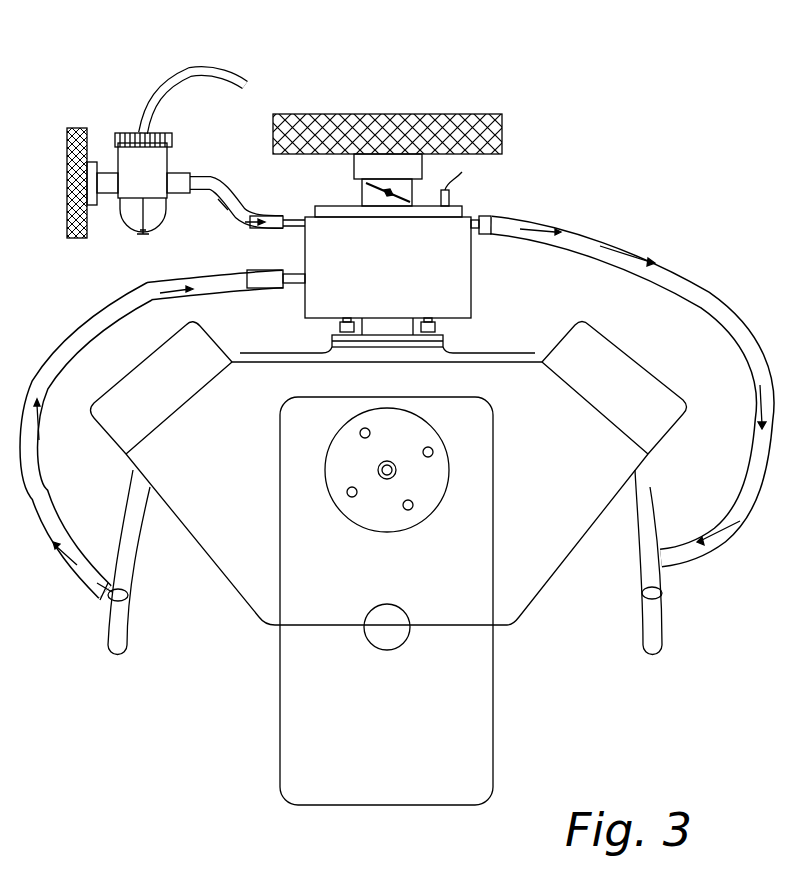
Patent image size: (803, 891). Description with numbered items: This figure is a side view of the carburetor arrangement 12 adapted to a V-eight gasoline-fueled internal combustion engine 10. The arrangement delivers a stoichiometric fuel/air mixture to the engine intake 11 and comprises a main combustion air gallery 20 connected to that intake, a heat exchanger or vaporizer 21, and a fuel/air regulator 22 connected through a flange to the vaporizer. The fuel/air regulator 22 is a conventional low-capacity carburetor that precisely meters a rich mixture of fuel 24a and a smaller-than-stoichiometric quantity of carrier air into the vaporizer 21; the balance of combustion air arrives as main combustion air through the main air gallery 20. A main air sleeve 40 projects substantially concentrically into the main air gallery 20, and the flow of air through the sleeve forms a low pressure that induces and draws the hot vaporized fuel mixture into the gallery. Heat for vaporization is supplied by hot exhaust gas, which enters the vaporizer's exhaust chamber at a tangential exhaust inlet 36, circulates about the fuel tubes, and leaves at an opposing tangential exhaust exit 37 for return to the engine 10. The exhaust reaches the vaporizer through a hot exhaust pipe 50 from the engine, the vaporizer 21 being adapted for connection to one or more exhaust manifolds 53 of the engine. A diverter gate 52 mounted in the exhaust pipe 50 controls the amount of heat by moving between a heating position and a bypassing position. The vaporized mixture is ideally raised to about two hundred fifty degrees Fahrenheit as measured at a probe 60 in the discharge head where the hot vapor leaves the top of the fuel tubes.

The engine 10 is at (568, 463).
The intake 11 is at (470, 340).
The carburetor arrangement 12 is at (503, 260).
The main combustion air gallery 20 is at (347, 323).
The vaporizer 21 is at (472, 285).
The fuel/air regulator 22 is at (128, 147).
The fuel 24a is at (205, 68).
The exhaust inlet 36 is at (290, 272).
The exhaust exit 37 is at (481, 215).
The main air sleeve 40 is at (362, 188).
The hot exhaust pipe 50 is at (115, 299).
The diverter gate 52 is at (95, 578).
The exhaust manifolds 53 is at (125, 556).
The probe 60 is at (465, 172).